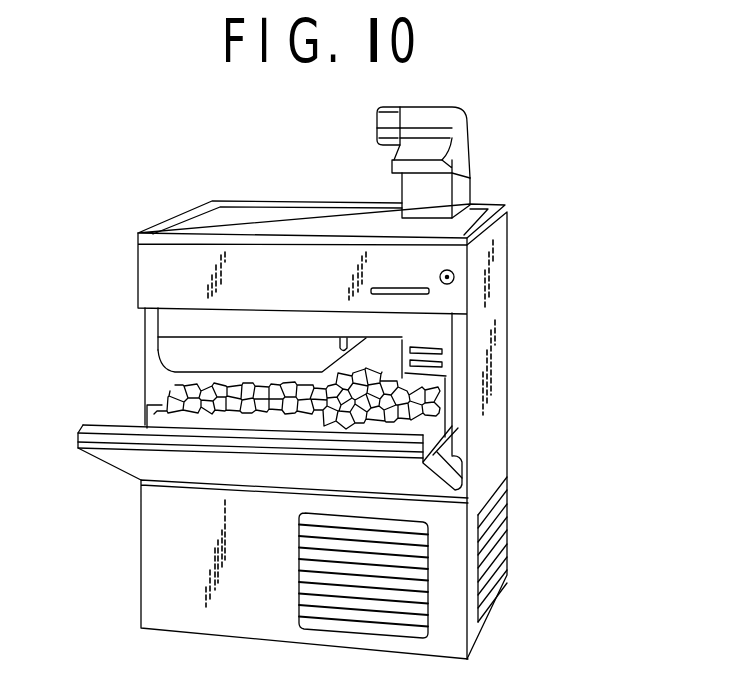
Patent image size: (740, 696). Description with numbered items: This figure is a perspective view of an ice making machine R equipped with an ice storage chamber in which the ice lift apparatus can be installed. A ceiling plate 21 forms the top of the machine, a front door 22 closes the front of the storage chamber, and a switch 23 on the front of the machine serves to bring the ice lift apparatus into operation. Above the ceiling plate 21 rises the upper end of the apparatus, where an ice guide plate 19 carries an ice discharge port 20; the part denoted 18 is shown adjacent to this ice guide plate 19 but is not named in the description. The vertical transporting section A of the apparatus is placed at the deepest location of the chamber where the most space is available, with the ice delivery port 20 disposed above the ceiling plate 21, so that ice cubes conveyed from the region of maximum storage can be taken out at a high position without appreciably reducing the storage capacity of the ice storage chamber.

The dispenser support column side 18 is at (462, 193).
The ice guide plate 19 is at (433, 197).
The ice discharge port 20 is at (430, 168).
The ceiling plate 21 is at (312, 218).
The front door 22 is at (187, 460).
The switch 23 is at (453, 287).
The vertical transporting section A is at (447, 360).
The ice making machine R is at (492, 397).